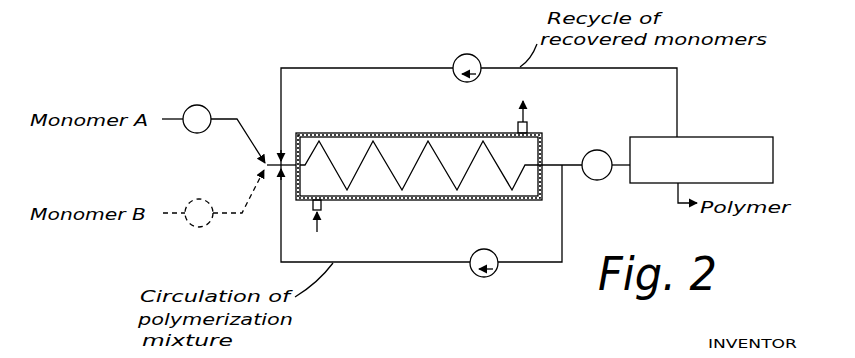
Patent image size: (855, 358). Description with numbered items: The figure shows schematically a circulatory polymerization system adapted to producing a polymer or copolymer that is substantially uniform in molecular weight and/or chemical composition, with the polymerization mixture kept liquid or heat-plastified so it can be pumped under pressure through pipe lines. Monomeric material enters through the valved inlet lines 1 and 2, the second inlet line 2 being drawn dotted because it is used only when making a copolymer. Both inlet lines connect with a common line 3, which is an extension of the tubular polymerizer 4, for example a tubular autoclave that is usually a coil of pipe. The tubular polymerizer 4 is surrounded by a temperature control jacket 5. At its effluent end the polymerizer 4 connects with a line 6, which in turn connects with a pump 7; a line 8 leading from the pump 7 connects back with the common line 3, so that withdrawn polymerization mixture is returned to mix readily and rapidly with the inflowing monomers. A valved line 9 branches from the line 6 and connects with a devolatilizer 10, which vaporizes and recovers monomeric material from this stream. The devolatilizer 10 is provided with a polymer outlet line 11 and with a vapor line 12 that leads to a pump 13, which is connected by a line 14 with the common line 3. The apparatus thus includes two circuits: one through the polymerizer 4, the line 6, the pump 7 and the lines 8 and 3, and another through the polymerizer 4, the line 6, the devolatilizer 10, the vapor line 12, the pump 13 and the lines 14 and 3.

The valved inlet line 1 is at (172, 121).
The valved inlet line 2 is at (234, 196).
The common line 3 is at (270, 159).
The tubular polymerizer 4 is at (355, 170).
The temperature control jacket 5 is at (357, 133).
The line 6 is at (555, 168).
The pump 7 is at (495, 276).
The line 8 is at (281, 241).
The valved line 9 is at (572, 162).
The devolatilizer 10 is at (757, 136).
The polymer outlet line 11 is at (675, 192).
The vapor line 12 is at (678, 100).
The pump 13 is at (458, 56).
The line 14 is at (342, 67).